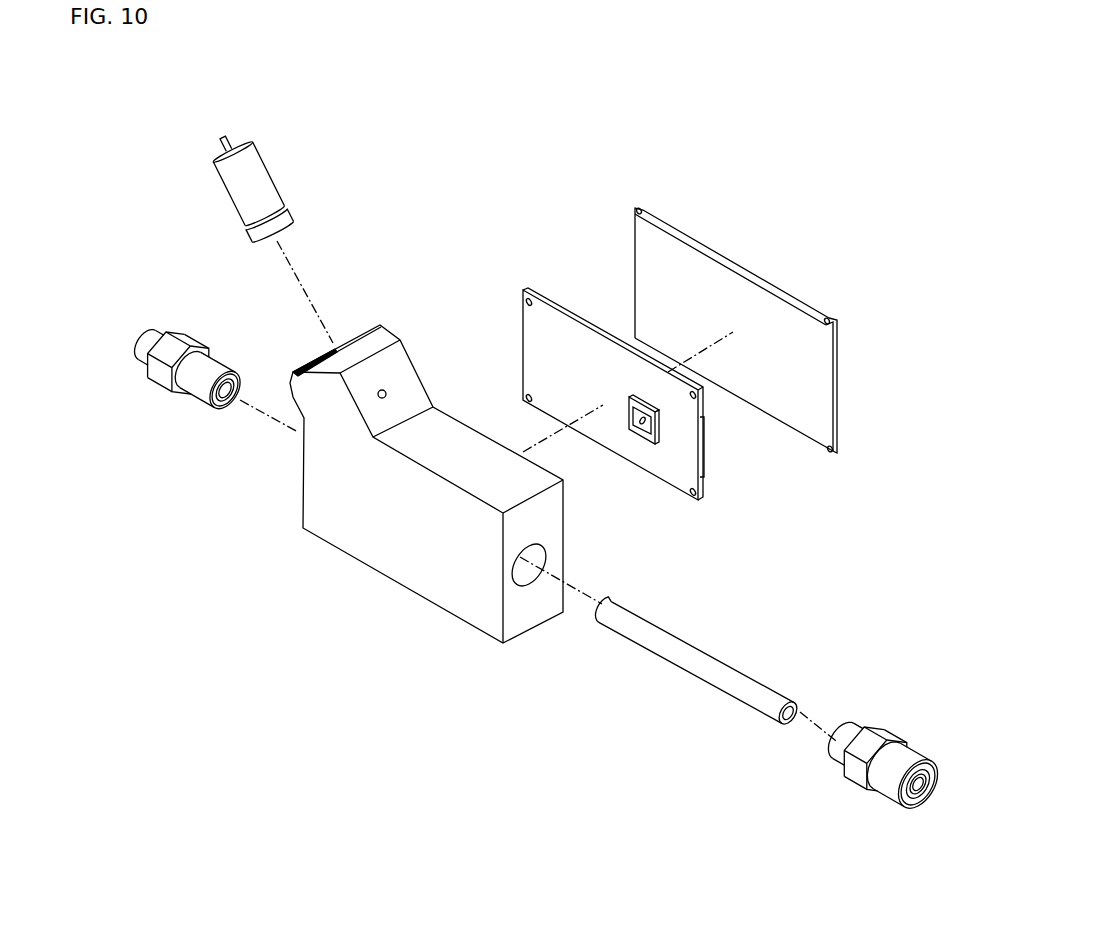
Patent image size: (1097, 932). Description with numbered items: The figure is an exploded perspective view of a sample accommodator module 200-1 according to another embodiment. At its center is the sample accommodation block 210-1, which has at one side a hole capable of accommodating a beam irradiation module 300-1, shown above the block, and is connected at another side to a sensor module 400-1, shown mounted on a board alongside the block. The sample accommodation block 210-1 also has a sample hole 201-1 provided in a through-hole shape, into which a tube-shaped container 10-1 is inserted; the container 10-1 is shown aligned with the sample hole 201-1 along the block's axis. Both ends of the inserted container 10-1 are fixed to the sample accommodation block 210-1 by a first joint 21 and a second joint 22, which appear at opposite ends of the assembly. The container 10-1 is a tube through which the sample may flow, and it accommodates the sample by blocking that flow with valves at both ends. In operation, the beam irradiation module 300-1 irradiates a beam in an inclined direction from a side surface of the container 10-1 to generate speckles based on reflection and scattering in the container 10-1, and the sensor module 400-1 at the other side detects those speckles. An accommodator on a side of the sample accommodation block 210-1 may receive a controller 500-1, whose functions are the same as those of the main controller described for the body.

The container 10-1 is at (690, 665).
The first joint 21 is at (866, 793).
The second joint 22 is at (152, 365).
The sample accommodator module 200-1 is at (778, 220).
The sample hole 201-1 is at (538, 578).
The sample accommodation block 210-1 is at (390, 537).
The beam irradiation module 300-1 is at (260, 172).
The sensor module 400-1 is at (635, 433).
The controller 500-1 is at (542, 343).